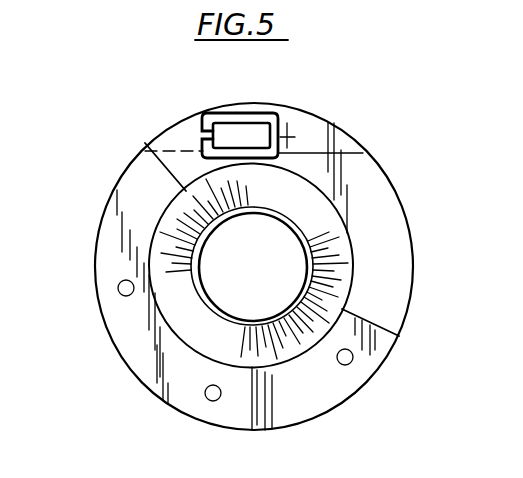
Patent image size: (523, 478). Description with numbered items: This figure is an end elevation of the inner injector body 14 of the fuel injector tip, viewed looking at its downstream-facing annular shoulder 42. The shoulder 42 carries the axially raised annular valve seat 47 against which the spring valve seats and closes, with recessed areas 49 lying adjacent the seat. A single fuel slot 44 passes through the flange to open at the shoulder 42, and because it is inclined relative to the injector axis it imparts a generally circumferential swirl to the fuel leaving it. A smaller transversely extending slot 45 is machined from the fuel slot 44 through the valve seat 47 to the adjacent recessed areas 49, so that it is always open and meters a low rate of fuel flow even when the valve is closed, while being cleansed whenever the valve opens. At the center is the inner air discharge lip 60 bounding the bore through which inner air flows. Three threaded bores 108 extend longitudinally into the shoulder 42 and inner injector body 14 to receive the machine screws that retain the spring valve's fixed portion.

The inner injector body 14 is at (350, 233).
The downstream-facing annular shoulder 42 is at (398, 289).
The fuel slot 44 is at (253, 133).
The transversely extending slot 45 is at (205, 132).
The valve seat 47 is at (228, 117).
The recessed areas 49 is at (166, 139).
The inner air discharge lip 60 is at (311, 267).
The threaded bores 108 is at (118, 291).